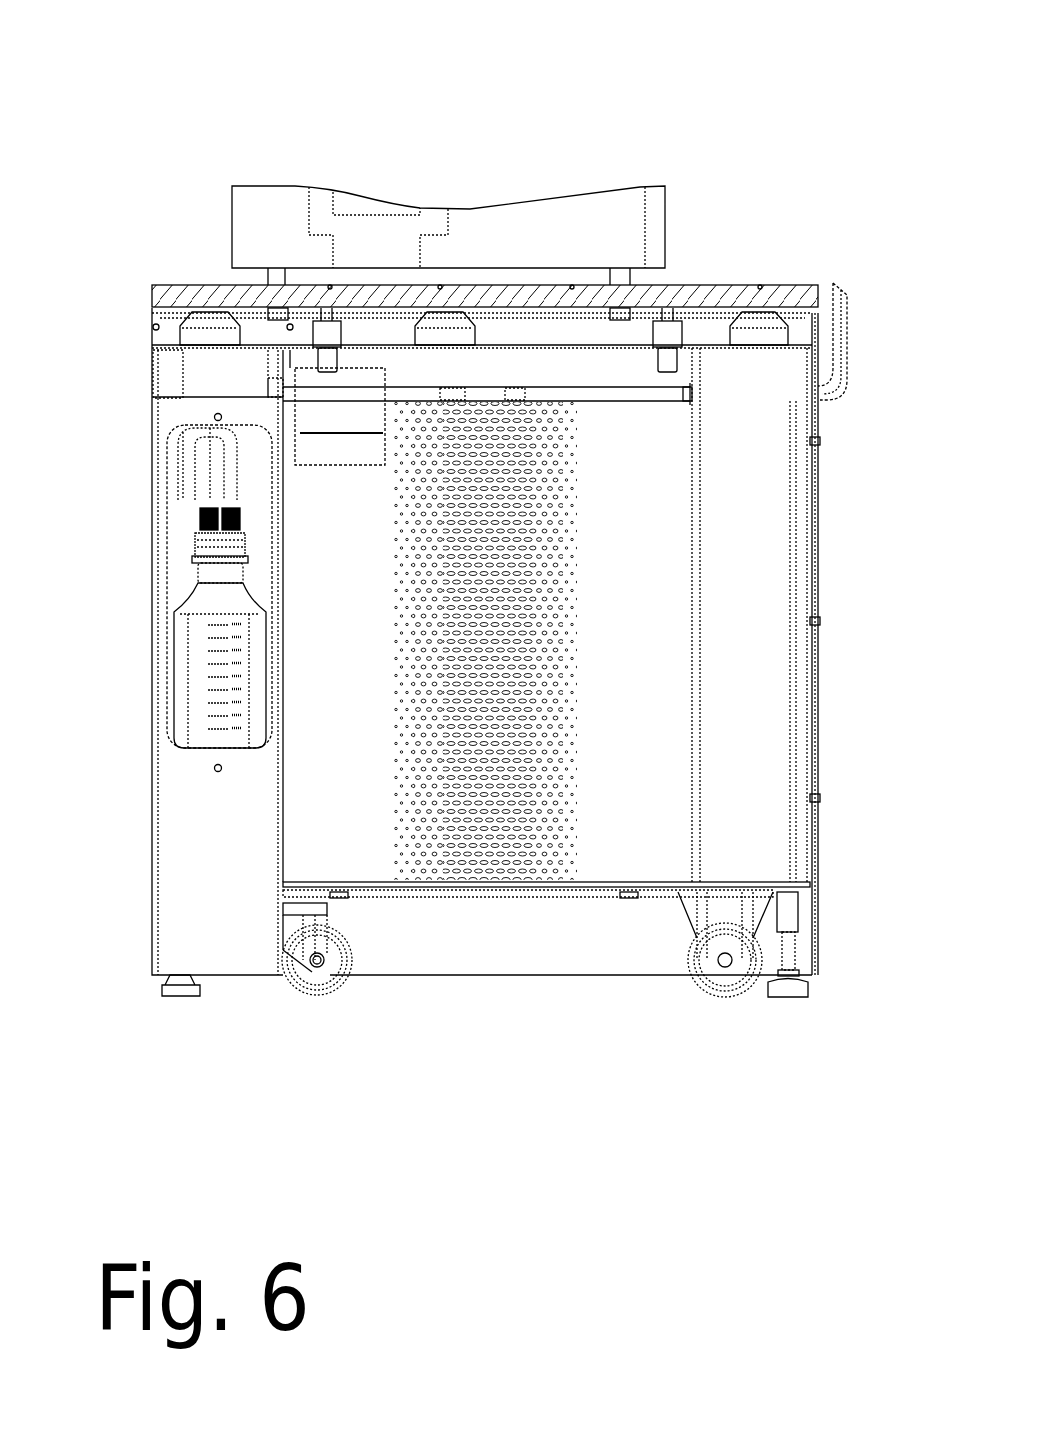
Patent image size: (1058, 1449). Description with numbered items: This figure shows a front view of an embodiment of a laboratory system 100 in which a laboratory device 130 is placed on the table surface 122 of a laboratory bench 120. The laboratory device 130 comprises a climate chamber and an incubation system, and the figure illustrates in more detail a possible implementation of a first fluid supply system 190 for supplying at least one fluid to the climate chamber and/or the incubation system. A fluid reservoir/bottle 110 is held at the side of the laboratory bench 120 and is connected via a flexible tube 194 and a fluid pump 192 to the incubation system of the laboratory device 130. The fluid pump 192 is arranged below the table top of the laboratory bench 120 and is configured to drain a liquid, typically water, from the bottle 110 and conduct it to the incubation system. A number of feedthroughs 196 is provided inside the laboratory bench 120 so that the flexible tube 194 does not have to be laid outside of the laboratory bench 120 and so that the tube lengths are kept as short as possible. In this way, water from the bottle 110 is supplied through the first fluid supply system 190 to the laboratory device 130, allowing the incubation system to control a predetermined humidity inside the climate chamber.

The laboratory system 100 is at (705, 100).
The fluid reservoir/bottle 110 is at (205, 705).
The laboratory bench 120 is at (790, 808).
The table surface 122 is at (174, 286).
The laboratory device 130 is at (237, 208).
The first fluid supply system 190 is at (585, 464).
The fluid pump 192 is at (340, 416).
The flexible tube 194 is at (230, 485).
The feedthroughs 196 is at (281, 392).